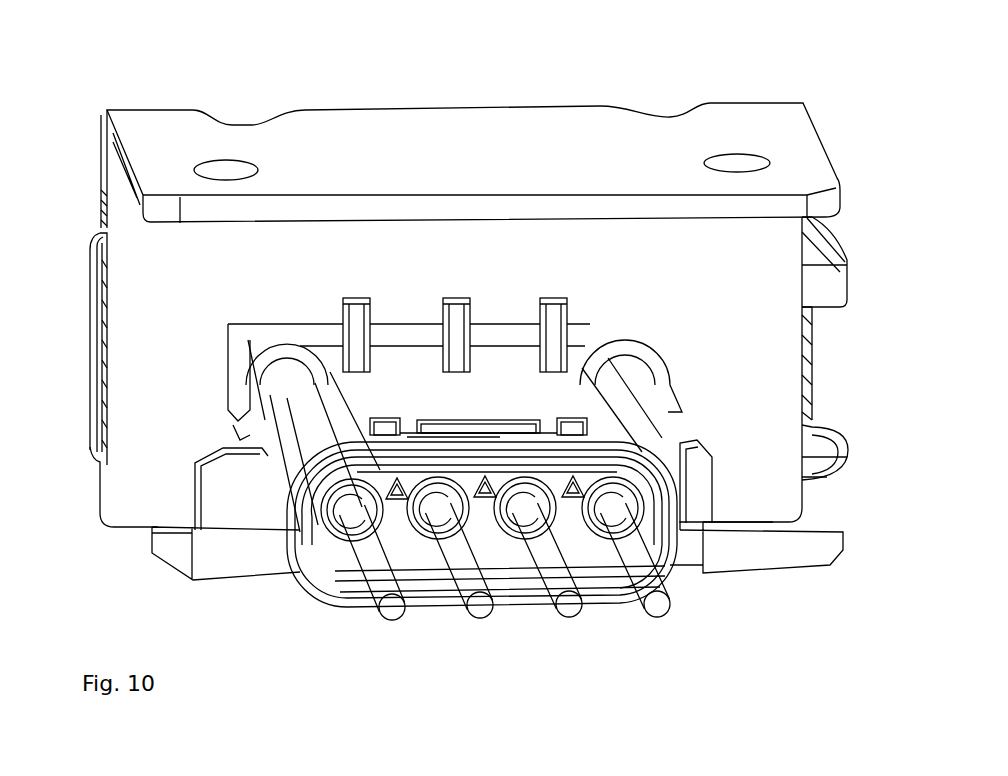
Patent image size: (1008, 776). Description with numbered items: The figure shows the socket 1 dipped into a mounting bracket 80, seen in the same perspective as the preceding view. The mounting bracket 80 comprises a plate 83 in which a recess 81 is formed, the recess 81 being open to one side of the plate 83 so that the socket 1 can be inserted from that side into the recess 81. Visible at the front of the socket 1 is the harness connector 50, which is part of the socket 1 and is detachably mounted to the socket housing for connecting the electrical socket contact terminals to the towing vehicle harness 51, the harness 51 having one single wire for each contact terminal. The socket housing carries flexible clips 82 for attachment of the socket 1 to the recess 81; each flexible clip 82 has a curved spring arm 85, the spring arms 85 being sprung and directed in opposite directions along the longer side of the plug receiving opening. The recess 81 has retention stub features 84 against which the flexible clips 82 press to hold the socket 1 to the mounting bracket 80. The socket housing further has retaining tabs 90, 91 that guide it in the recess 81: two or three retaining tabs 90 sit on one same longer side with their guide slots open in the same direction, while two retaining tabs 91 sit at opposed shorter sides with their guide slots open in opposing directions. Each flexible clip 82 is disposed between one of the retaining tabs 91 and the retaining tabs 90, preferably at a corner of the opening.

The socket 1 is at (820, 597).
The harness connector 50 is at (336, 602).
The towing vehicle harness 51 is at (486, 634).
The mounting bracket 80 is at (518, 92).
The recess 81 is at (264, 344).
The flexible clips 82 is at (247, 375).
The plate 83 is at (757, 398).
The retention stub features 84 is at (233, 433).
The curved spring arm 85 is at (264, 353).
The retaining tabs 90 is at (357, 318).
The retaining tabs 91 is at (231, 523).